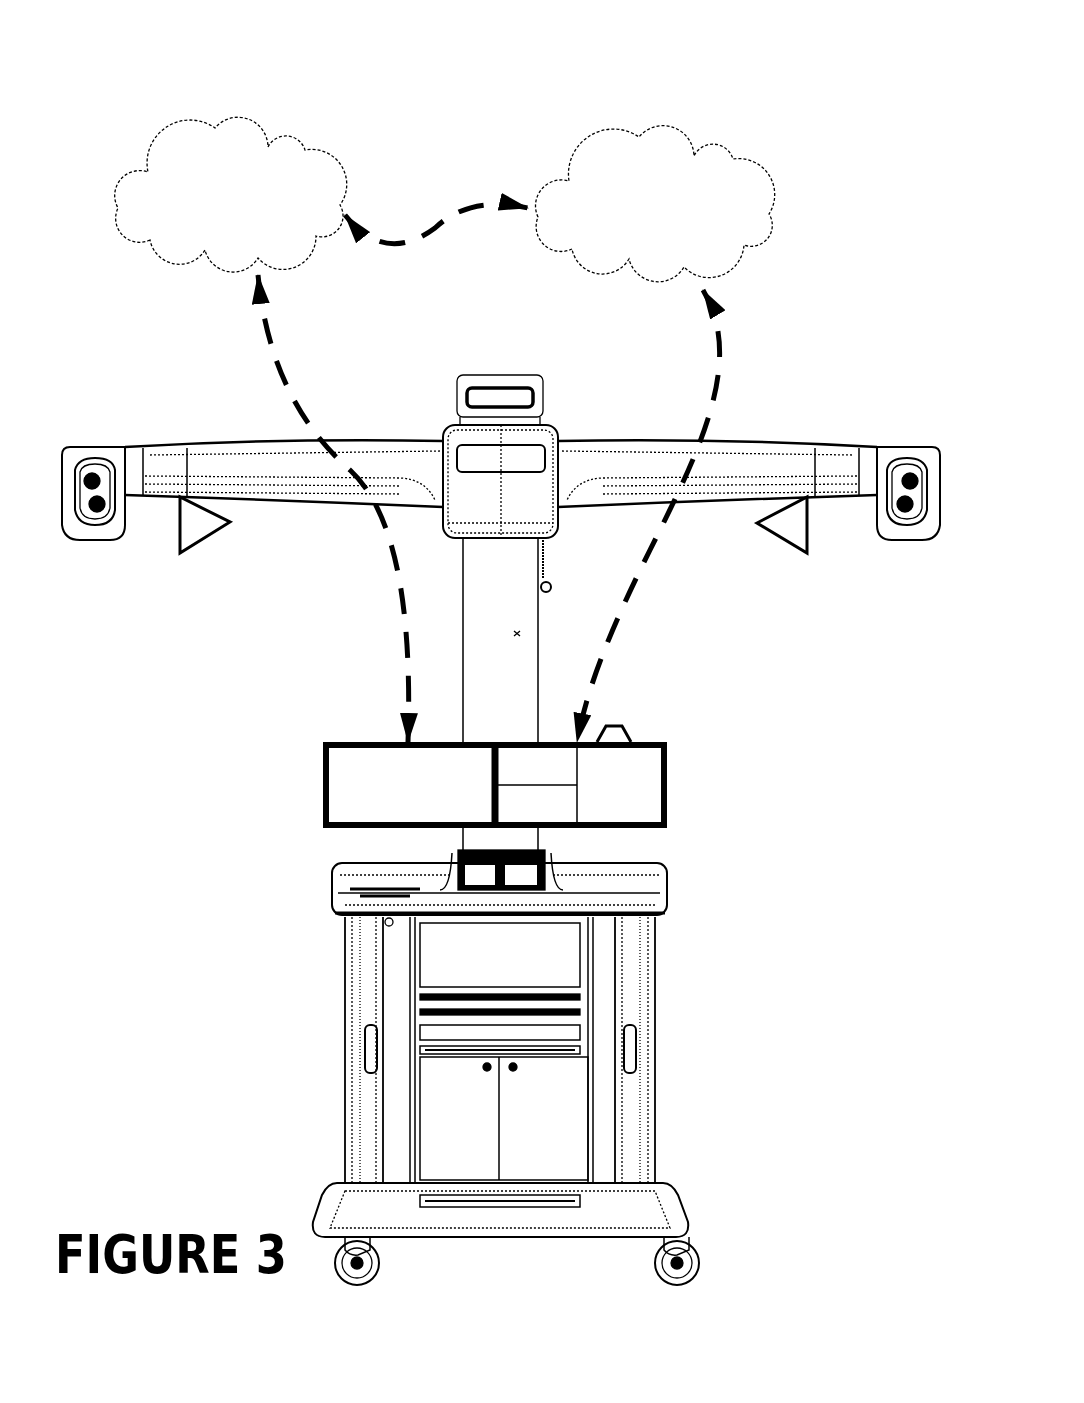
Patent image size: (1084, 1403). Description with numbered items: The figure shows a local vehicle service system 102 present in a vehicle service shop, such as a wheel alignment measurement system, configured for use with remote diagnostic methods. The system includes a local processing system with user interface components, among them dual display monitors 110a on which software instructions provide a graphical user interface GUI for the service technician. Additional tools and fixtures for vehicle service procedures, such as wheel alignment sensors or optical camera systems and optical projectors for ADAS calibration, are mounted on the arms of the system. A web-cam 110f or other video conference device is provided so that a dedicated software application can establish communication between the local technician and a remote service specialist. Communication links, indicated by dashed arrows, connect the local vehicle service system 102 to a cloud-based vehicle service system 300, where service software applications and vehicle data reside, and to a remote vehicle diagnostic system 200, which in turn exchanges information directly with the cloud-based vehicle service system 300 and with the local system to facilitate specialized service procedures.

The cloud-based vehicle service system 300 is at (235, 175).
The remote vehicle diagnostic system 200 is at (653, 193).
The web-cam 110f is at (620, 717).
The display monitors 110a is at (680, 783).
The graphical user interface GUI is at (423, 777).
The local vehicle service system 102 is at (677, 1053).